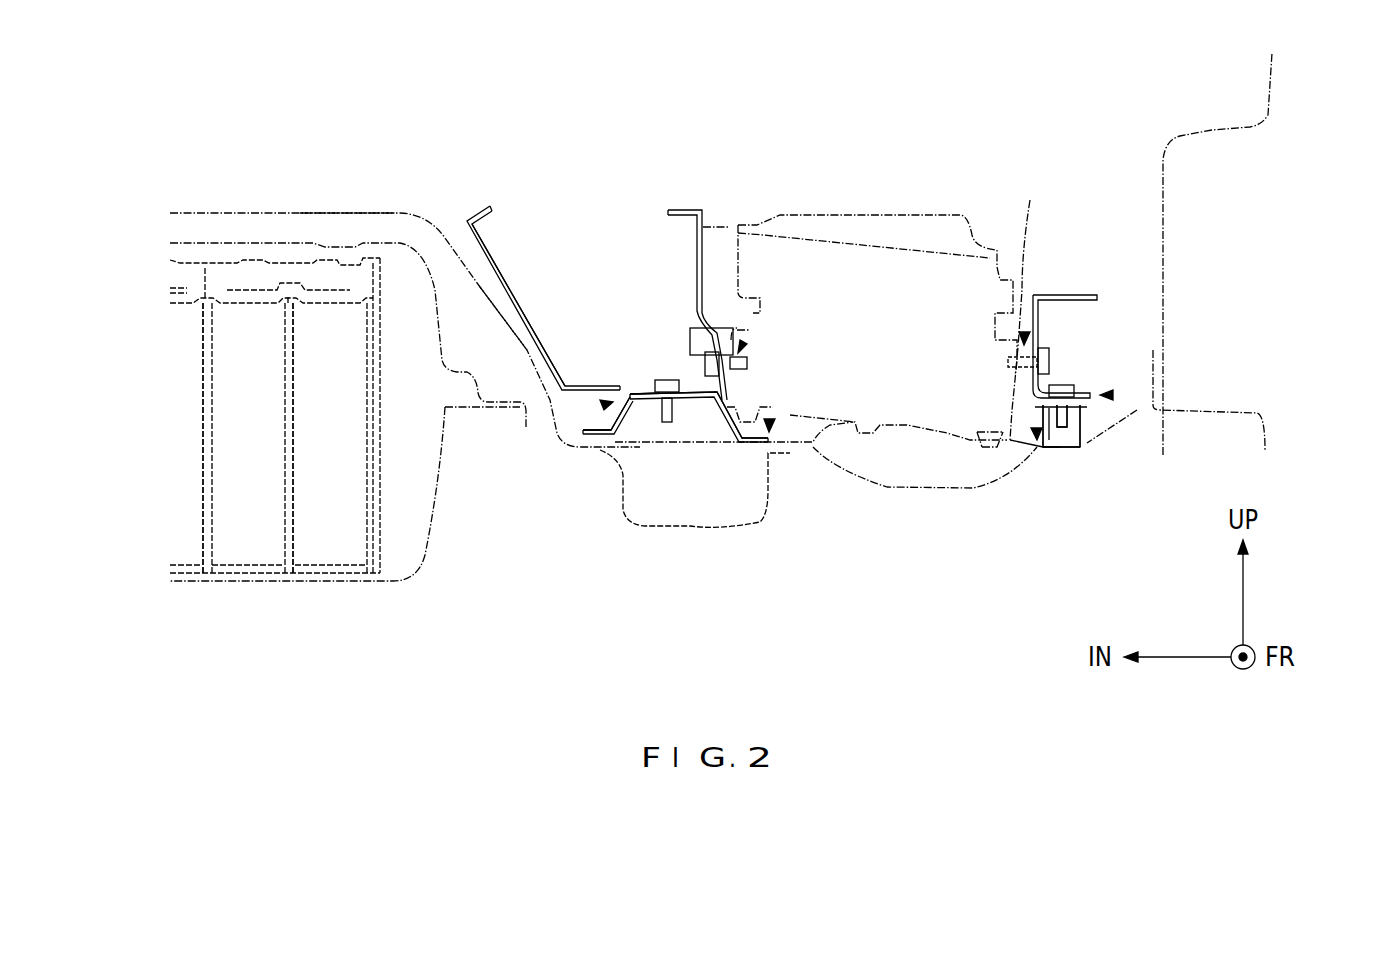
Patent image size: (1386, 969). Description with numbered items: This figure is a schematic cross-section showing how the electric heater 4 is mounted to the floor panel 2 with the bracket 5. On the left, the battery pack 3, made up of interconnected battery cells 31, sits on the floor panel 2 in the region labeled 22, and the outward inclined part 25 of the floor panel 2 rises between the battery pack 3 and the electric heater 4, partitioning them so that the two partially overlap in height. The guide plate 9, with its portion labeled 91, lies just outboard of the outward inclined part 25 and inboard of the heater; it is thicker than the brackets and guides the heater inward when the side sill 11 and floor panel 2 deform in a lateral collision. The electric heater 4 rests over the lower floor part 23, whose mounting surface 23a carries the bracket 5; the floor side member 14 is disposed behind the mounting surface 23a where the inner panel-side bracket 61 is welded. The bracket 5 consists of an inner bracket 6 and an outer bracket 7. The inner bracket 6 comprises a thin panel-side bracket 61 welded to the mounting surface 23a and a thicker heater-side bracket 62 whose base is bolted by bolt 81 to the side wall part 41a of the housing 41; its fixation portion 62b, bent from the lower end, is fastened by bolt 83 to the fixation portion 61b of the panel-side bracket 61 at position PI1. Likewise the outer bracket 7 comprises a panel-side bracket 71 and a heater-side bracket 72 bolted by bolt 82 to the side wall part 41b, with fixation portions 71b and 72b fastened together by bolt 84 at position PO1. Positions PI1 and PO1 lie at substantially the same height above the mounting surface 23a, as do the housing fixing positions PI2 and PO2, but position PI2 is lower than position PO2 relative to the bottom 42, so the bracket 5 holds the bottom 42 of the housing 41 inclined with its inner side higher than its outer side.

The floor panel 2 is at (425, 210).
The battery pack 3 is at (342, 126).
The battery cell 31 is at (331, 318).
The upper wall of body 22 is at (372, 213).
The guide plate 9 is at (478, 208).
The bar portion 91 is at (492, 253).
The outward inclined part 25 is at (508, 320).
The bracket 5 is at (689, 198).
The electric heater 4 is at (870, 226).
The housing 41 is at (1030, 225).
The side wall part 41a is at (708, 330).
The side wall part 41b is at (1018, 385).
The bolt 81 is at (700, 360).
The bolt 82 is at (1049, 362).
The bolt 83 is at (662, 380).
The bolt 84 is at (1074, 390).
The inner bracket 6 is at (750, 635).
The panel-side bracket 61 is at (637, 403).
The heater-side bracket 62 is at (719, 400).
The fixation portion 61b is at (688, 403).
The fixation portion 62b is at (636, 395).
The outer bracket 7 is at (1134, 540).
The panel-side bracket 71 is at (1068, 448).
The heater-side bracket 72 is at (1088, 448).
The fixation portion 71b is at (1046, 448).
The fixation portion 72b is at (1095, 408).
The lower floor part 23 is at (838, 420).
The mounting surface 23a is at (770, 425).
The bottom 42 is at (910, 425).
The floor side member 14 is at (763, 524).
The side sill 11 is at (1209, 130).
The position PI1 is at (608, 405).
The position PI2 is at (744, 342).
The position PO1 is at (1106, 395).
The position PO2 is at (1025, 338).